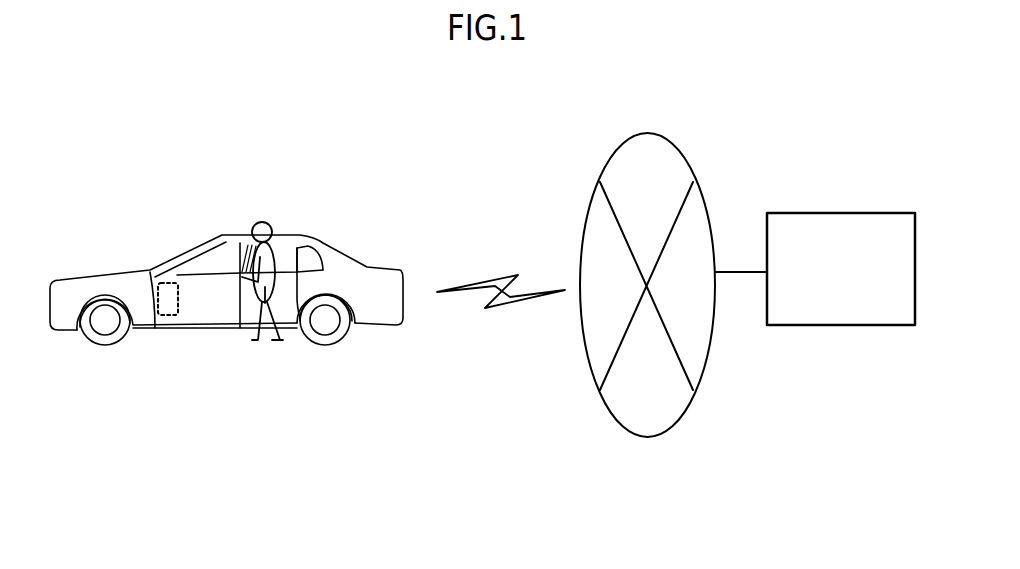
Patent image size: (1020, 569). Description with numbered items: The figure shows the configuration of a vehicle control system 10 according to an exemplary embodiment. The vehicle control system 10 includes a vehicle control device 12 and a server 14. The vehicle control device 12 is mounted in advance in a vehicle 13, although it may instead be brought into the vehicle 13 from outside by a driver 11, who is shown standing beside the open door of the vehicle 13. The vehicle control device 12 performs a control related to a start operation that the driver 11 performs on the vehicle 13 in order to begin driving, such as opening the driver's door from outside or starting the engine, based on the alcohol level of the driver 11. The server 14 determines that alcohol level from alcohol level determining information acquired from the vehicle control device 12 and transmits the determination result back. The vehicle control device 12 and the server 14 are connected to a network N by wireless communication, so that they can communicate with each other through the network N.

The vehicle control system 10 is at (857, 130).
The driver 11 is at (272, 226).
The vehicle control device 12 is at (173, 283).
The vehicle 13 is at (218, 235).
The server 14 is at (837, 213).
The network N is at (682, 157).